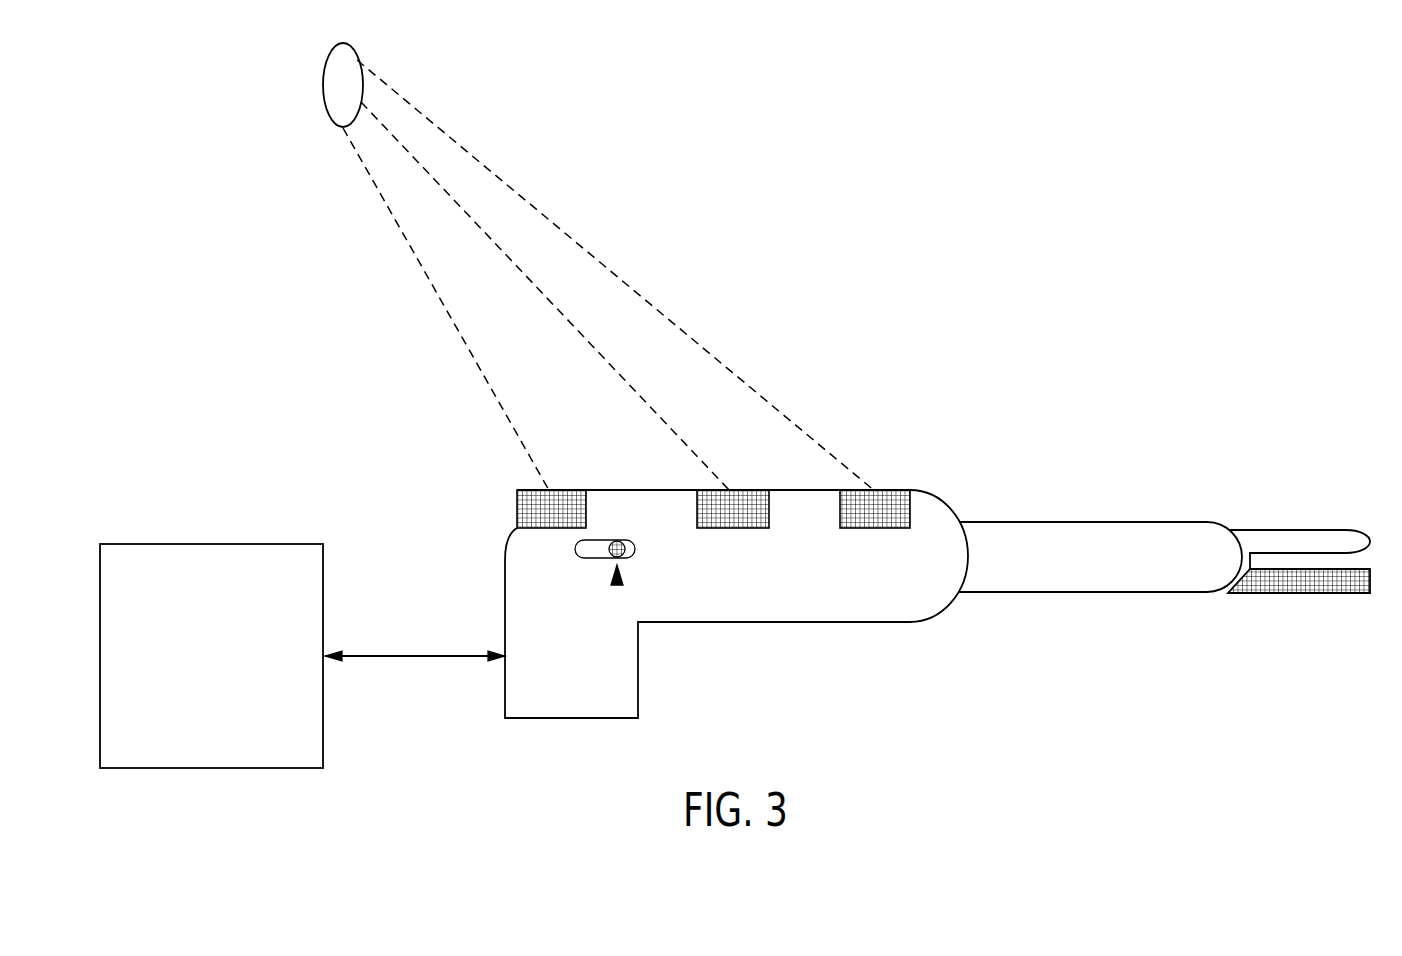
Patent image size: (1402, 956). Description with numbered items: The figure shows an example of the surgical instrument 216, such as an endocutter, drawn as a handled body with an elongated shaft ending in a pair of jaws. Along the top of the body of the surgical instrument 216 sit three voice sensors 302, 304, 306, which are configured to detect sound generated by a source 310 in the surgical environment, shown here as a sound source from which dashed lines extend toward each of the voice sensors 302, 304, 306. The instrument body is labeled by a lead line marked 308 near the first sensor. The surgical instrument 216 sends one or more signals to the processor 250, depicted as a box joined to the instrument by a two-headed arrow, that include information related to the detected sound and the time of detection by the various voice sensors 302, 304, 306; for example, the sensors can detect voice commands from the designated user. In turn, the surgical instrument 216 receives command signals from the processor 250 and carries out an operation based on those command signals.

The surgical instrument 216 is at (1127, 307).
The processor 250 is at (228, 662).
The voice sensor 302 is at (551, 500).
The voice sensor 304 is at (732, 500).
The voice sensor 306 is at (876, 500).
The housing / handle 308 is at (517, 511).
The source 310 is at (324, 86).